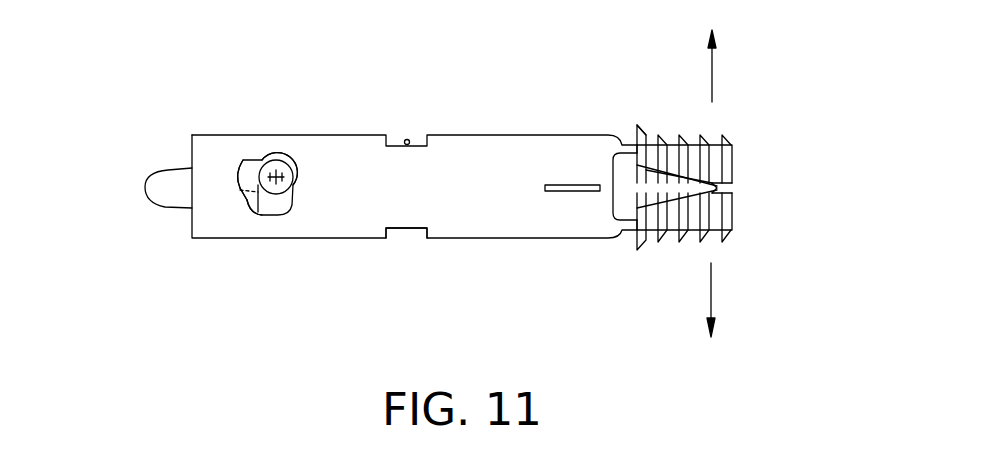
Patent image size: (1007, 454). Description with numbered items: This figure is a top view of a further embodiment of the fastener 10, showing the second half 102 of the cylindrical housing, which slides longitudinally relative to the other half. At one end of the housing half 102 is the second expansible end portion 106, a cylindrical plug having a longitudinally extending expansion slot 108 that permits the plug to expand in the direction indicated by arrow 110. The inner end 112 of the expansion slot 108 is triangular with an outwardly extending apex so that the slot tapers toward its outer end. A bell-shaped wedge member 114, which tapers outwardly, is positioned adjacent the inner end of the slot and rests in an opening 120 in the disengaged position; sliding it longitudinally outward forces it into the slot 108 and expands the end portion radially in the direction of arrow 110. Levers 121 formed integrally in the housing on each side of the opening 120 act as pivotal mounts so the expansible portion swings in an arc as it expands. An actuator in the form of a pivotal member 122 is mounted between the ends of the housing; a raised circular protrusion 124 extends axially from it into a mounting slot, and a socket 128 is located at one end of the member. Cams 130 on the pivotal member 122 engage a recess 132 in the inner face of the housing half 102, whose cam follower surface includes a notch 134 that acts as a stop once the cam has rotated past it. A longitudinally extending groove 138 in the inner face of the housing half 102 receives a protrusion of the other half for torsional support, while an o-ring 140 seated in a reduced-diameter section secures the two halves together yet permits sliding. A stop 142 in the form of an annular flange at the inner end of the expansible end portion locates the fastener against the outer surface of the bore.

The fastener 10 is at (166, 310).
The second half of the housing 102 is at (482, 143).
The second expansible end portion 106 is at (717, 160).
The expansion slot 108 is at (720, 182).
The arrow 110 is at (712, 78).
The inner end of the expansion slot 112 is at (660, 178).
The first wedge member 114 is at (155, 185).
The opening 120 is at (615, 218).
The lever 121 is at (625, 145).
The pivotal member 122 is at (297, 141).
The raised circular protrusion 124 is at (288, 176).
The socket 128 is at (280, 162).
The cam 130 is at (268, 202).
The recess 132 is at (237, 147).
The notch 134 is at (245, 207).
The groove 138 is at (575, 181).
The o-ring 140 is at (405, 236).
The stop 142 is at (637, 125).